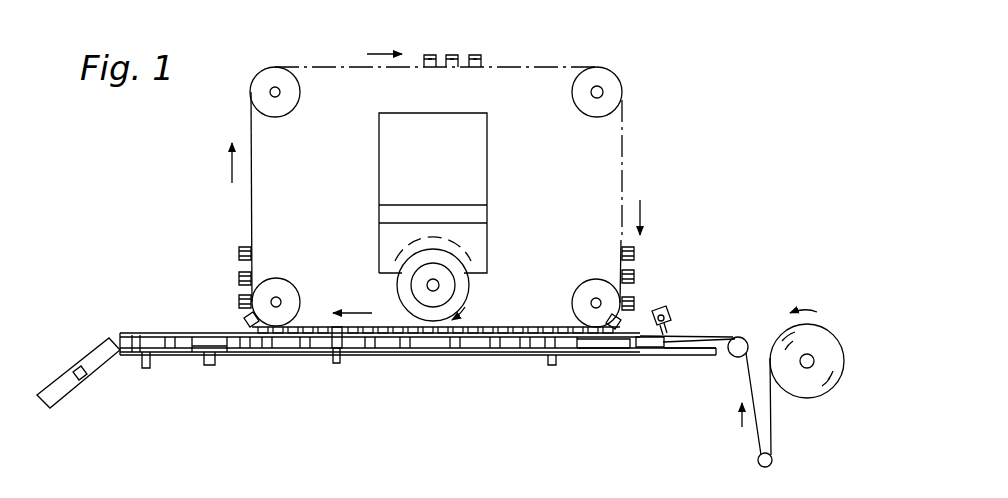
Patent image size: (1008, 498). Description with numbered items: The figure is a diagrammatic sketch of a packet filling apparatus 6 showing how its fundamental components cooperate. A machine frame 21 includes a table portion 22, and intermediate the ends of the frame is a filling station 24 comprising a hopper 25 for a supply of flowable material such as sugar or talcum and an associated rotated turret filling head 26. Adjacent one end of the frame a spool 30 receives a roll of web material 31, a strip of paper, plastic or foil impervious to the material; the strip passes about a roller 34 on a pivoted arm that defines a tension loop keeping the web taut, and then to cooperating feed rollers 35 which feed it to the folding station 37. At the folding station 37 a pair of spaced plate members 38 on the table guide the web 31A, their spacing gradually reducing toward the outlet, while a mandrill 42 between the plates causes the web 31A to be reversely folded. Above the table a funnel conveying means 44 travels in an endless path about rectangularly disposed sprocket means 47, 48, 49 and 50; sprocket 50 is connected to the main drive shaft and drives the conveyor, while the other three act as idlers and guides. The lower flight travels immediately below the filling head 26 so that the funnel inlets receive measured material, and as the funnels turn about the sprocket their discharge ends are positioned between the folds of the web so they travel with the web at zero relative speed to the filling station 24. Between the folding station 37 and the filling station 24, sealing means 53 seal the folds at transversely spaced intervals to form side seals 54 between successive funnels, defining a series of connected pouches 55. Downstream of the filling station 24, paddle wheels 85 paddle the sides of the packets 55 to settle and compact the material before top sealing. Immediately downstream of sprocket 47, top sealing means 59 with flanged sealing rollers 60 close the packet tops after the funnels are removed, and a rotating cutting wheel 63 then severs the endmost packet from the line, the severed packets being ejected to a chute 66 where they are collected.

The feed station 6 is at (136, 332).
The machine frame 21 is at (667, 364).
The table portion 22 is at (595, 352).
The filling station 24 is at (492, 168).
The hopper 25 is at (470, 137).
The turret filling head 26 is at (470, 292).
The spool 30 is at (805, 369).
The web material 31 is at (816, 385).
The web 31A is at (690, 347).
The roller 34 is at (760, 467).
The feed roller 35 is at (743, 339).
The folding station 37 is at (673, 338).
The plate member 38 is at (650, 348).
The mandrill 42 is at (668, 326).
The funnel conveying means 44 is at (238, 252).
The sprocket means 47 is at (285, 290).
The sprocket means 48 is at (289, 112).
The sprocket means 49 is at (622, 92).
The driving sprocket 50 is at (594, 290).
The sealing means 53 is at (542, 356).
The side seals 54 is at (421, 340).
The pouches 55 is at (291, 341).
The top sealing means 59 is at (190, 356).
The sealing roller 60 is at (222, 352).
The cutting wheel 63 is at (137, 346).
The chute 66 is at (62, 396).
The paddle wheels 85 is at (346, 340).